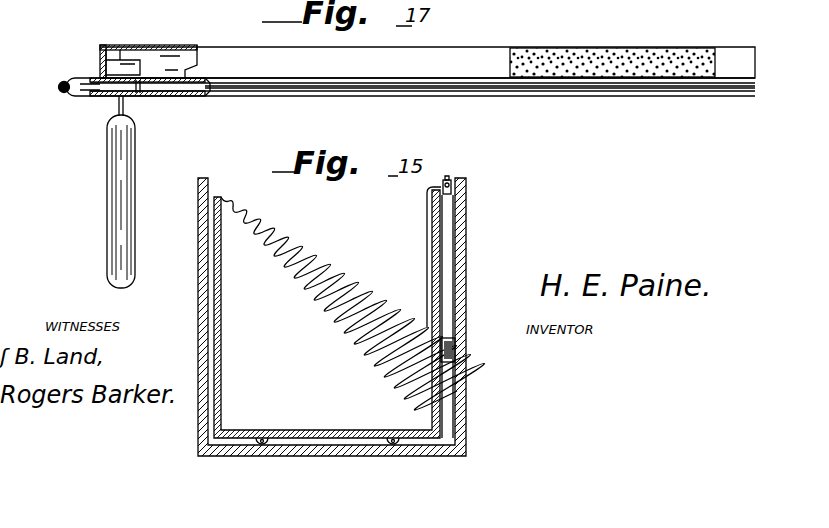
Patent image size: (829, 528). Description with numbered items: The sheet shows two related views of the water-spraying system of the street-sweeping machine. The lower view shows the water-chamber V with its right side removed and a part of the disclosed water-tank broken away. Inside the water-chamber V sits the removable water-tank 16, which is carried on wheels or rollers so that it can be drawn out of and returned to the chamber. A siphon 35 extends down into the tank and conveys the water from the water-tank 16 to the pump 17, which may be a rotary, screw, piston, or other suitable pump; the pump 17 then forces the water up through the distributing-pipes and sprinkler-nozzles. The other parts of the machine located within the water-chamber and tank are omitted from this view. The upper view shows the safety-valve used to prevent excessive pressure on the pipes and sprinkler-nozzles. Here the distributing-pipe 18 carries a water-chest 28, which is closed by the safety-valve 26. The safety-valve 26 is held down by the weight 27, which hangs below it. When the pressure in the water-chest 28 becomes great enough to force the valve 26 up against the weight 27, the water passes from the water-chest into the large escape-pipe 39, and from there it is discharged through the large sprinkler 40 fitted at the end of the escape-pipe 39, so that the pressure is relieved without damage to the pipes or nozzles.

In FIG. 17, the large escape-pipe 39 is at (427, 62).
In FIG. 17, the large sprinkler 40 is at (603, 64).
In FIG. 17, the safety-valve 26 is at (105, 72).
In FIG. 17, the distributing-pipe 18 is at (78, 80).
In FIG. 17, the water-chest 28 is at (117, 85).
In FIG. 17, the weight 27 is at (122, 166).
In FIG. 15, the water-chamber V is at (206, 251).
In FIG. 15, the removable water-tank 16 is at (219, 298).
In FIG. 15, the siphon 35 is at (440, 196).
In FIG. 15, the pump 17 is at (455, 364).